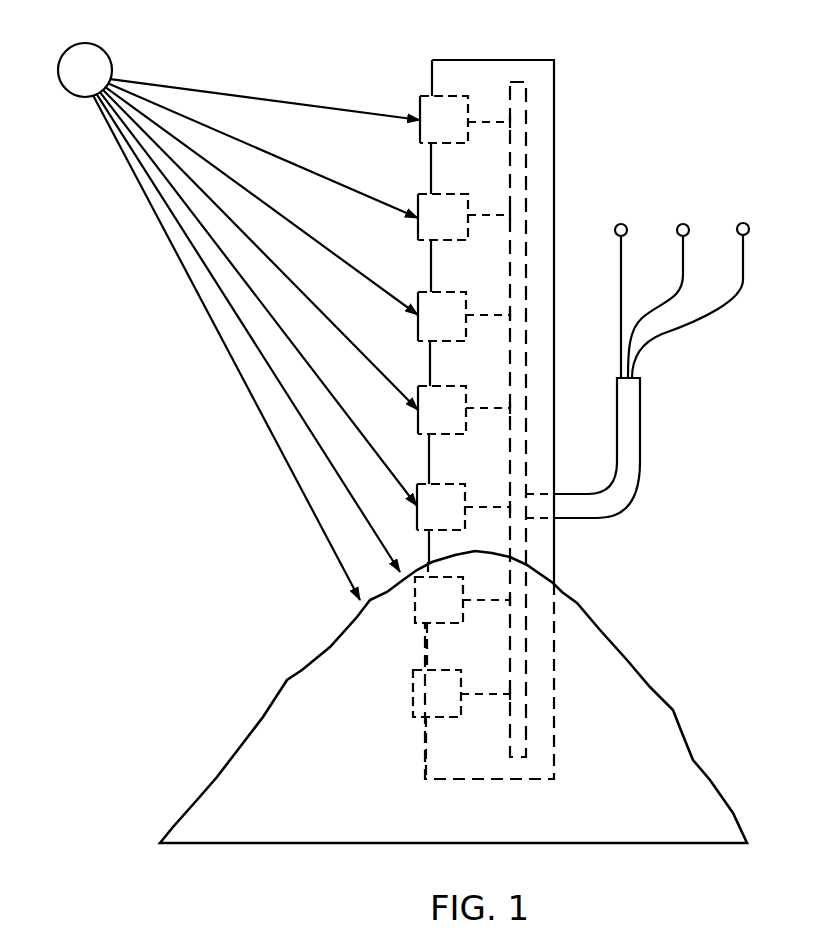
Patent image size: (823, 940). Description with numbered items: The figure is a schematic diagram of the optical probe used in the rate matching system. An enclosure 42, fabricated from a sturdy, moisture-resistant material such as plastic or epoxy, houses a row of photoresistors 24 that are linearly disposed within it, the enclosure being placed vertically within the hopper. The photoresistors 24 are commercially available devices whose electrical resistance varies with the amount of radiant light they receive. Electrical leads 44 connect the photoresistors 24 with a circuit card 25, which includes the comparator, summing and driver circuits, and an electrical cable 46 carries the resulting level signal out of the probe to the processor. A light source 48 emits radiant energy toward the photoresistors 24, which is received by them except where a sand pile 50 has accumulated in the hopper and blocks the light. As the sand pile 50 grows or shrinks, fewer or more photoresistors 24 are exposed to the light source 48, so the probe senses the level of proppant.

The photoresistors 24 is at (419, 601).
The circuit card 25 is at (516, 667).
The enclosure 42 is at (531, 60).
The electrical leads 44 is at (494, 123).
The electrical cable 46 is at (641, 451).
The light source 48 is at (66, 52).
The sand pile 50 is at (683, 735).